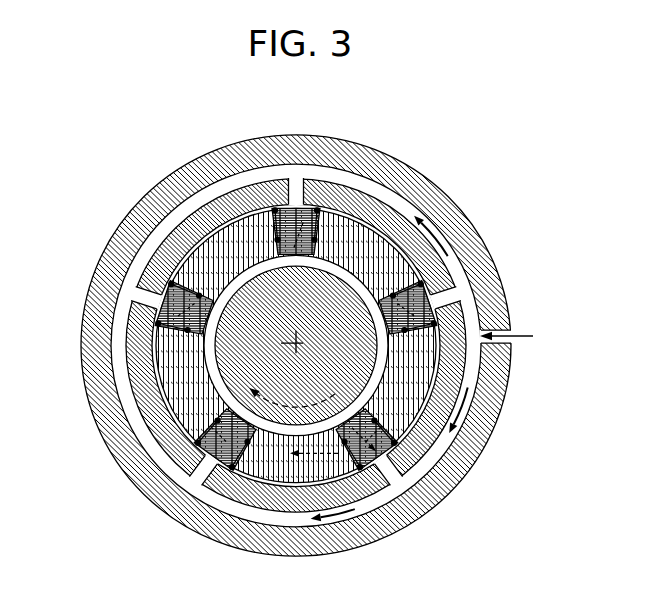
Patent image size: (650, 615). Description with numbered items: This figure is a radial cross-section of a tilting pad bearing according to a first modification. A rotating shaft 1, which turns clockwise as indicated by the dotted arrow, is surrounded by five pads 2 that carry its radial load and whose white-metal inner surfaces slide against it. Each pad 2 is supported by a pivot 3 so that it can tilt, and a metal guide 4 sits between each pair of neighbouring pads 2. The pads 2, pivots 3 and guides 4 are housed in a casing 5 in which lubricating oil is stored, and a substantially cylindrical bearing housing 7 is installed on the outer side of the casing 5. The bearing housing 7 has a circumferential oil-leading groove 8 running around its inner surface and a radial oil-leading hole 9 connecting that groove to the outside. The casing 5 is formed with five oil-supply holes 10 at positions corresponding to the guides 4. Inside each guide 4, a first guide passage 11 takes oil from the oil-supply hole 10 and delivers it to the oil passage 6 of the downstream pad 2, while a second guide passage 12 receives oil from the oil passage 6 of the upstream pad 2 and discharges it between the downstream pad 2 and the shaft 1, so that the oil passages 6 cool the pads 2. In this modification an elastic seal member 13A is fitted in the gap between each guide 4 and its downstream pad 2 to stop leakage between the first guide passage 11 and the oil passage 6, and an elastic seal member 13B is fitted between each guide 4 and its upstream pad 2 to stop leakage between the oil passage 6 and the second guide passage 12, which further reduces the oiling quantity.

The rotating shaft 1 is at (307, 283).
The pad 2 is at (240, 215).
The pivot 3 is at (193, 198).
The guide 4 is at (158, 276).
The casing 5 is at (385, 207).
The oil passage 6 is at (254, 490).
The bearing housing 7 is at (453, 207).
The circumferential oil-leading groove 8 is at (455, 272).
The radial oil-leading hole 9 is at (494, 338).
The oil-supply hole 10 is at (396, 470).
The first guide passage 11 is at (380, 480).
The second guide passage 12 is at (438, 482).
The elastic seal member 13A is at (350, 458).
The elastic seal member 13B is at (425, 446).